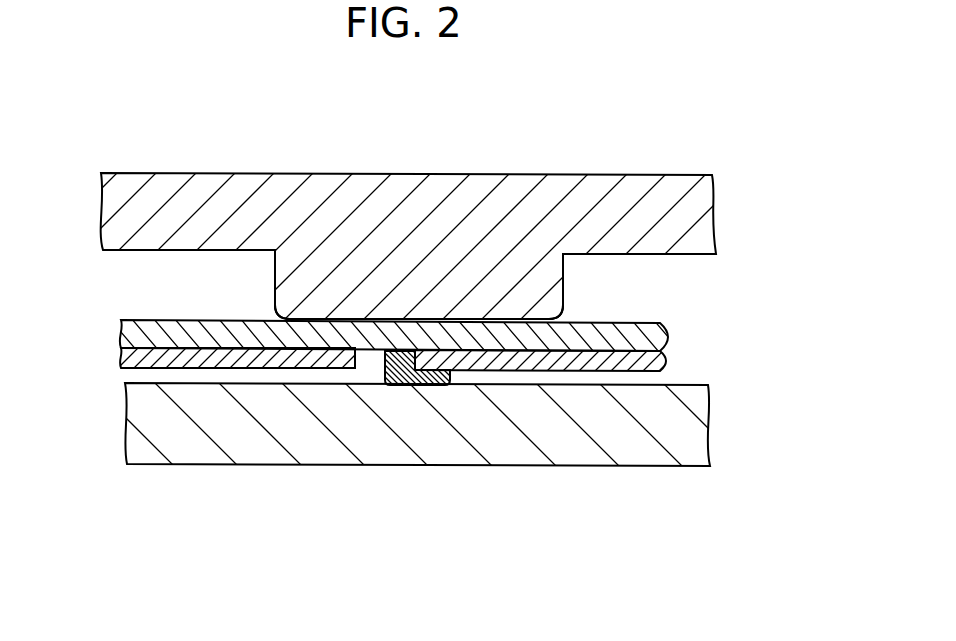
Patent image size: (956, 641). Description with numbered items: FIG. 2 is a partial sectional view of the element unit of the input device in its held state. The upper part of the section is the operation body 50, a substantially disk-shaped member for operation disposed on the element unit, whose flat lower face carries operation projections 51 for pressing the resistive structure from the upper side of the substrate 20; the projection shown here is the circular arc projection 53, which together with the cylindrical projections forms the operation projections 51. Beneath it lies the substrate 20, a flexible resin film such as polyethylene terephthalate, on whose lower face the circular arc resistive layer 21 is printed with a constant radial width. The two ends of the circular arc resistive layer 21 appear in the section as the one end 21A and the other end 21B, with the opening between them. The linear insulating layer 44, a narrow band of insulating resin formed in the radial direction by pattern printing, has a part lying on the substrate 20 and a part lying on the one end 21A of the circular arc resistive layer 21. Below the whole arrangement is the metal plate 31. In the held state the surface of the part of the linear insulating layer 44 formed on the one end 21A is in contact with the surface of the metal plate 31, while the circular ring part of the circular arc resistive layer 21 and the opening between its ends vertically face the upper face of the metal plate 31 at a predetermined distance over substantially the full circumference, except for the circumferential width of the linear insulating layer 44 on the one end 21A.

The operation body 50 is at (213, 185).
The circular arc projection 53 is at (415, 283).
The operation projection 51 is at (419, 284).
The substrate 20 is at (652, 335).
The circular arc resistive layer 21 is at (445, 433).
The one end 21A is at (450, 357).
The other end 21B is at (335, 358).
The linear insulating layer 44 is at (412, 385).
The metal plate 31 is at (182, 448).